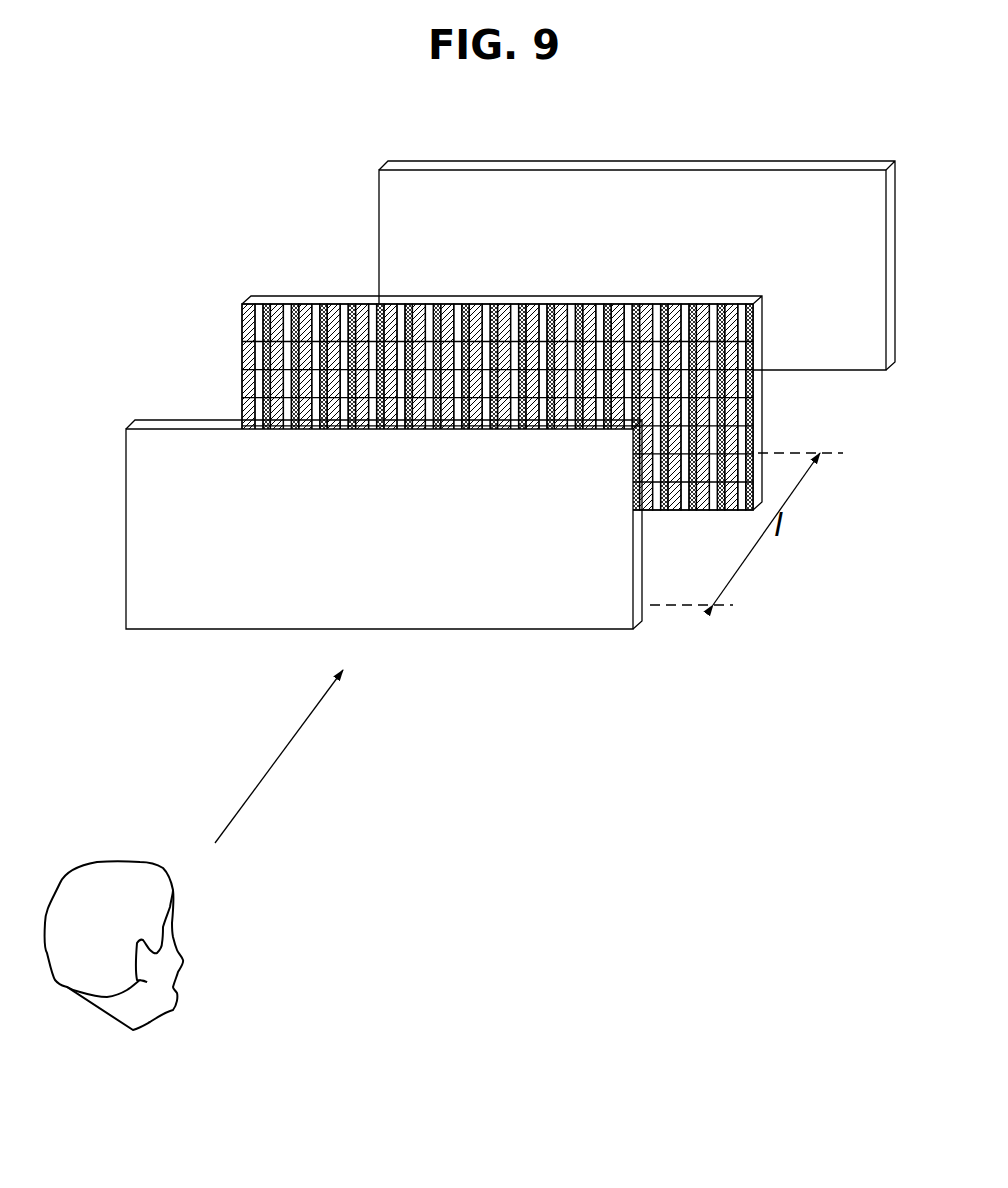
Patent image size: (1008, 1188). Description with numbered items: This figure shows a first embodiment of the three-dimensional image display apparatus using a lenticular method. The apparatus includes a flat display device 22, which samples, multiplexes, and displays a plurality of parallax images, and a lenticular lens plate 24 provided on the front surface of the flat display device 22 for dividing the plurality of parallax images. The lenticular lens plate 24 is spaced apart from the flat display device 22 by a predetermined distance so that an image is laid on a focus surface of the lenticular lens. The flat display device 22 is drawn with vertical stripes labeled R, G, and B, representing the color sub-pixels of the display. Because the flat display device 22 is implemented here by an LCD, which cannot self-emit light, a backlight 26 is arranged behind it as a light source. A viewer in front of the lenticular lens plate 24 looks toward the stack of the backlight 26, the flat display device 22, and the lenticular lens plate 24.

The flat display device 22 is at (467, 376).
The lenticular lens plate 24 is at (126, 445).
The backlight 26 is at (379, 192).
The red sub-pixel stripe R is at (248, 306).
The green sub-pixel stripe G is at (259, 306).
The blue sub-pixel stripe B is at (268, 306).